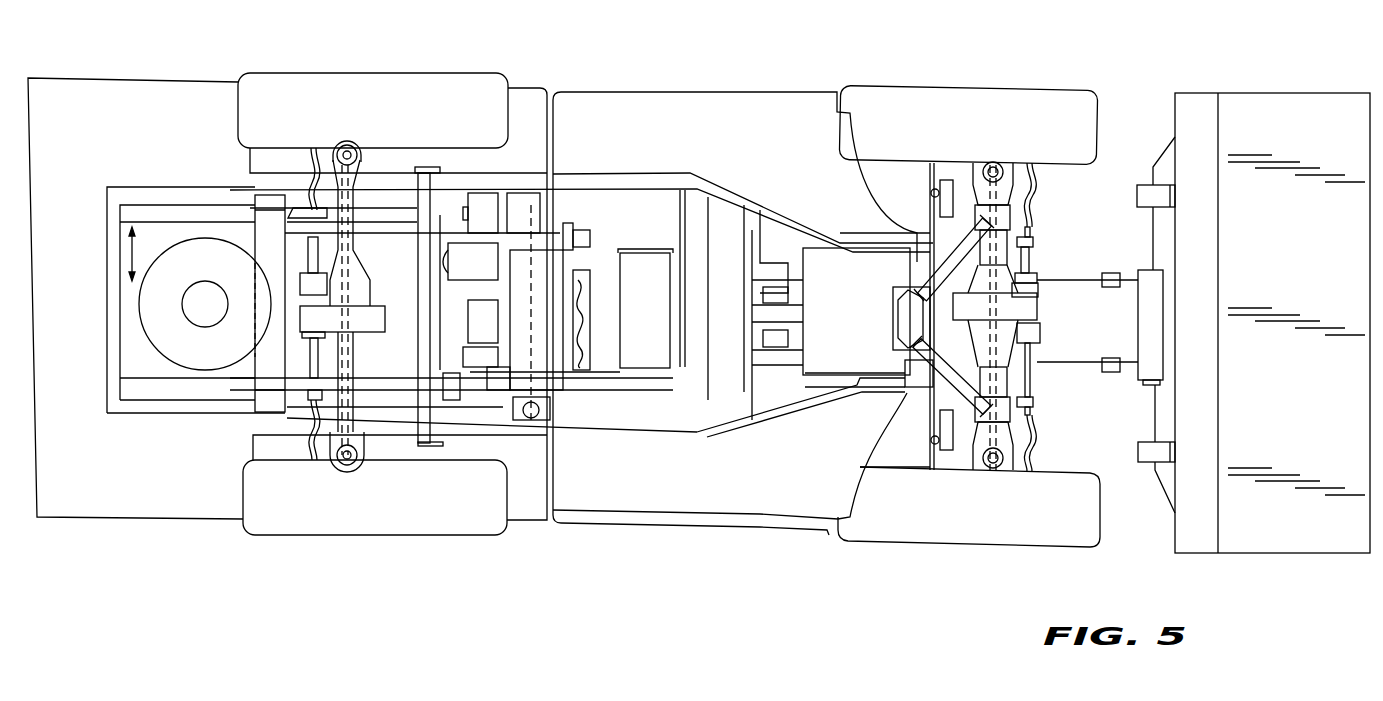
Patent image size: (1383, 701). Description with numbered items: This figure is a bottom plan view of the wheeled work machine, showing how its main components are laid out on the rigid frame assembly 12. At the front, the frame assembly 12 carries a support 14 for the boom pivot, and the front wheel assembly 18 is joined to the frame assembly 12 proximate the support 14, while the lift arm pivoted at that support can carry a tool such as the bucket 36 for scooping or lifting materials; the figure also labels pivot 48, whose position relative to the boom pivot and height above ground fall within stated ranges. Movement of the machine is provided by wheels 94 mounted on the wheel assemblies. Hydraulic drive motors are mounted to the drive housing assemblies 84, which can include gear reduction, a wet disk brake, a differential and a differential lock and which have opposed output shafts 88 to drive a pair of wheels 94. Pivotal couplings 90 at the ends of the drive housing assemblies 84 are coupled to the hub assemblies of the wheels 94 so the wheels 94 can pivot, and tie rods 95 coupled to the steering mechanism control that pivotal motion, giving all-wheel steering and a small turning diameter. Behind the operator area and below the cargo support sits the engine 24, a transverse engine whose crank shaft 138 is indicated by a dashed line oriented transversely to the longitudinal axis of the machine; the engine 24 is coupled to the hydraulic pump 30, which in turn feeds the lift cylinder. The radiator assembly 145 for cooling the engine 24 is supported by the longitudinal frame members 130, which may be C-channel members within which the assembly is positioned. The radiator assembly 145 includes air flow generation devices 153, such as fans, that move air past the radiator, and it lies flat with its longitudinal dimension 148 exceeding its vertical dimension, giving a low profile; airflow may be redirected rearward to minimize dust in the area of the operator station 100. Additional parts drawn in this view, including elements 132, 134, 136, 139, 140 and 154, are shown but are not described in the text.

The frame assembly 12 is at (740, 178).
The support 14 is at (946, 160).
The front wheel assembly 18 is at (1000, 290).
The engine 24 is at (557, 190).
The hydraulic pump 30 is at (645, 260).
The bucket 36 is at (1208, 90).
The pivot 48 is at (800, 302).
The drive housing assembly 84 is at (1050, 300).
The output shaft 88 is at (1007, 197).
The pivotal coupling 90 is at (325, 155).
The wheel 94 is at (357, 87).
The tie rod 95 is at (1028, 207).
The operator station 100 is at (792, 532).
The longitudinal frame member 130 is at (587, 178).
The front frame 132 is at (403, 198).
The hood 134 is at (678, 130).
The seat support 136 is at (823, 248).
The crank shaft 138 is at (543, 345).
The lower frame rail 139 is at (710, 433).
The wheel well 140 is at (877, 357).
The radiator assembly 145 is at (151, 352).
The longitudinal dimension 148 is at (118, 250).
The air flow generation device 153 is at (192, 248).
The pivot boss 154 is at (930, 312).